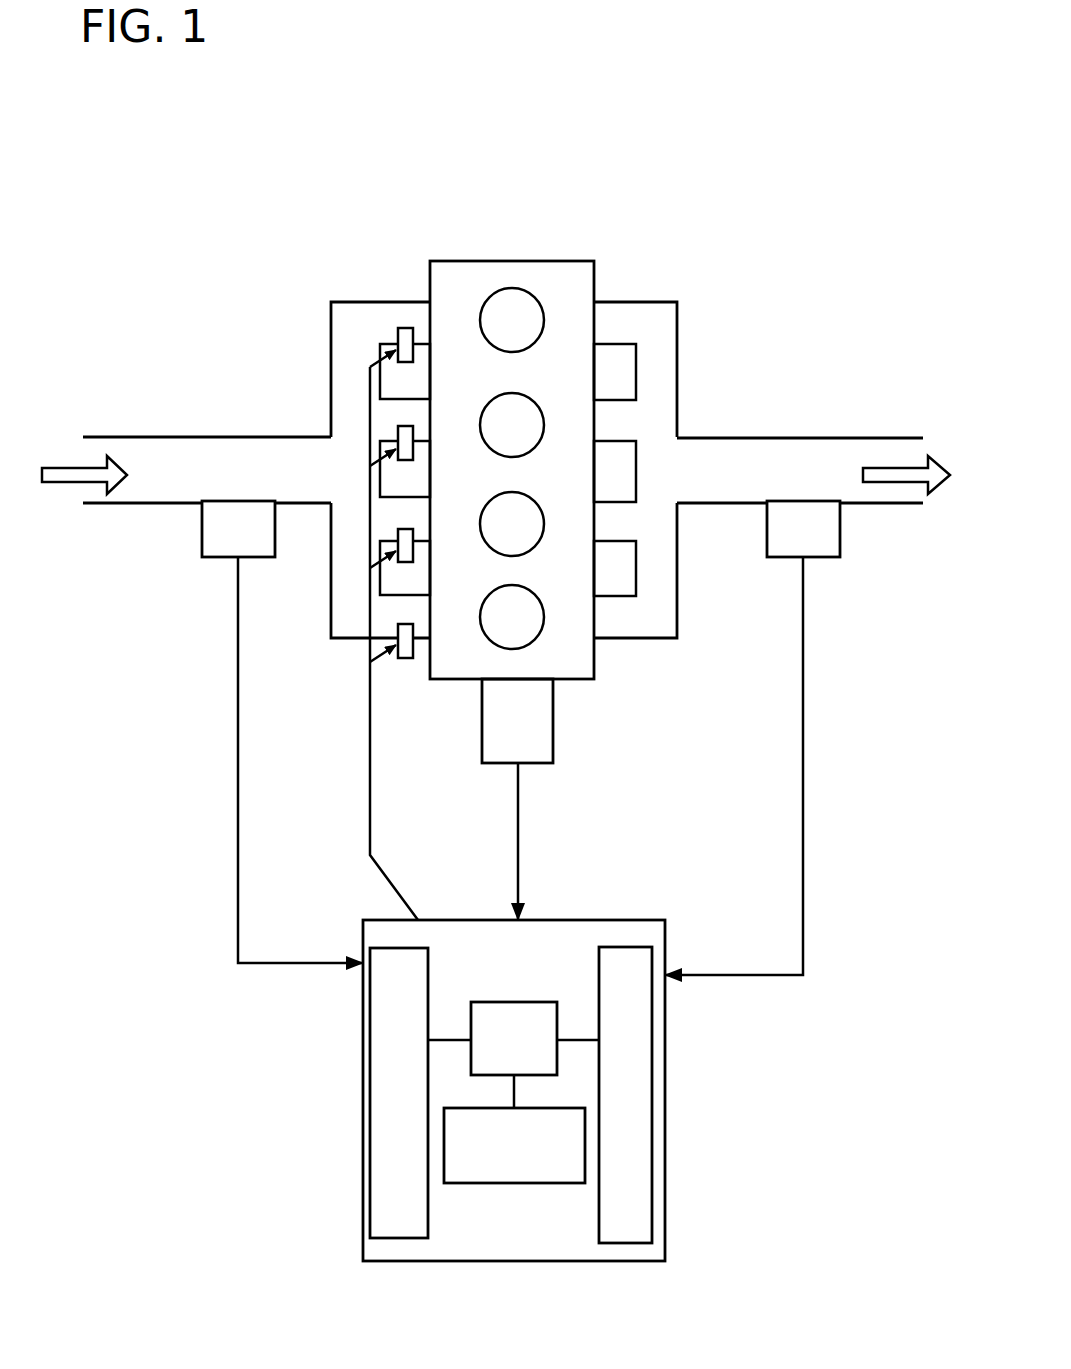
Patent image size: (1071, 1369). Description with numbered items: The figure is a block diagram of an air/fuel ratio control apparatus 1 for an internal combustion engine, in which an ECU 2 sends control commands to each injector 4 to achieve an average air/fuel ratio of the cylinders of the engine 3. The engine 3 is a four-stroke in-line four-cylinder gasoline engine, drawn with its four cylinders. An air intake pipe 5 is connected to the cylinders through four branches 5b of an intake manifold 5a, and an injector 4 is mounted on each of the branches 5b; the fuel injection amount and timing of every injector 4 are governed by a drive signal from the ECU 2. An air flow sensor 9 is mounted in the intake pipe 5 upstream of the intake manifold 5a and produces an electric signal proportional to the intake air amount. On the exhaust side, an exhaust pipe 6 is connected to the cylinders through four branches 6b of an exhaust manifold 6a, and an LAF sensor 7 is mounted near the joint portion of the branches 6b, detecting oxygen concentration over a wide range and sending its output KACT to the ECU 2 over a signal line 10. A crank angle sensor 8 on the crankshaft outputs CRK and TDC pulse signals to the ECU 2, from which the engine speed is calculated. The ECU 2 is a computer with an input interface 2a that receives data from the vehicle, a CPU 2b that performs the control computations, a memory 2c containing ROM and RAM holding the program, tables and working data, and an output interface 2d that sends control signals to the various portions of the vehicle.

The air/fuel ratio control apparatus 1 is at (296, 177).
The ECU 2 is at (515, 1062).
The input interface 2a is at (368, 1175).
The CPU 2b is at (515, 1002).
The memory 2c is at (505, 1183).
The output interface 2d is at (652, 1185).
The engine 3 is at (512, 261).
The injector 4 is at (400, 327).
The air intake pipe 5 is at (205, 437).
The intake manifold 5a is at (331, 410).
The branches 5b is at (403, 302).
The exhaust pipe 6 is at (819, 438).
The exhaust manifold 6a is at (677, 410).
The branches 6b is at (620, 302).
The LAF sensor 7 is at (840, 530).
The crank angle sensor 8 is at (553, 723).
The air flow sensor 9 is at (202, 530).
The signal line 10 is at (790, 806).